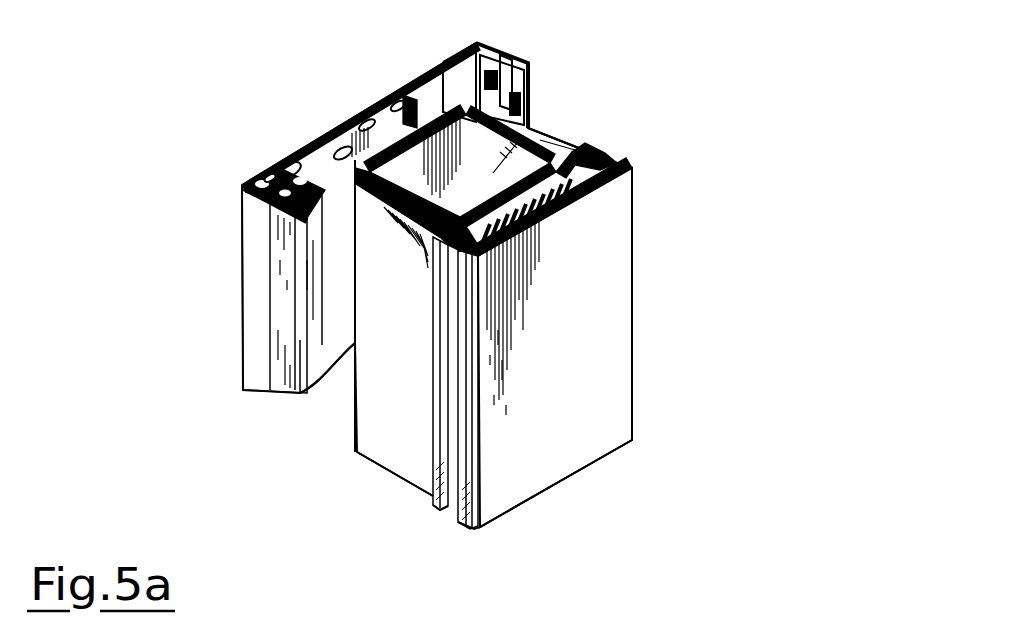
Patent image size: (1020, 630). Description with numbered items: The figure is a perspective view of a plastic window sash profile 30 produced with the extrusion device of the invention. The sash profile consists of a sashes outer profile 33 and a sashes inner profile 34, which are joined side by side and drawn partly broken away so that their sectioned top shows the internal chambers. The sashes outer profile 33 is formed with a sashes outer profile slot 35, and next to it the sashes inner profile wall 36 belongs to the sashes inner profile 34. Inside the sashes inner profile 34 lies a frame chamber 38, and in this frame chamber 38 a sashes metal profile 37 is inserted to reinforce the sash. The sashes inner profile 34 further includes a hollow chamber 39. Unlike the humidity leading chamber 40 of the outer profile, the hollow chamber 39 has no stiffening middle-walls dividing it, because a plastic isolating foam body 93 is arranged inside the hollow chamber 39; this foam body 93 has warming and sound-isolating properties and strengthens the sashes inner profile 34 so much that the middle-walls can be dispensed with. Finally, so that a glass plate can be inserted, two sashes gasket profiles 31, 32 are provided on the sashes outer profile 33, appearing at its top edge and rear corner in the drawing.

The hollow profile 30 is at (642, 287).
The sashes gasket profile 31 is at (273, 185).
The sashes gasket profile 32 is at (463, 52).
The sashes outer profile 33 is at (367, 113).
The sashes inner profile 34 is at (593, 323).
The sashes outer profile slot 35 is at (338, 368).
The sashes inner profile wall 36 is at (413, 130).
The sashes metal profile 37 is at (533, 127).
The frame chamber 38 is at (533, 143).
The hollow chamber 39 is at (543, 222).
The humidity leading chamber 40 is at (337, 127).
The plastic isolating foam body 93 is at (600, 163).